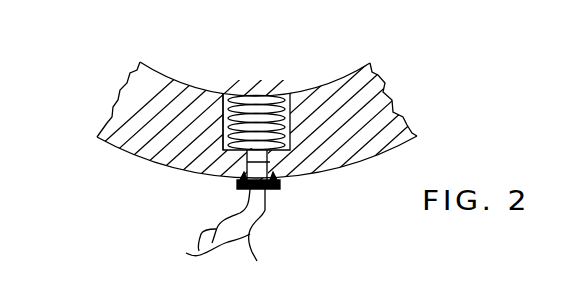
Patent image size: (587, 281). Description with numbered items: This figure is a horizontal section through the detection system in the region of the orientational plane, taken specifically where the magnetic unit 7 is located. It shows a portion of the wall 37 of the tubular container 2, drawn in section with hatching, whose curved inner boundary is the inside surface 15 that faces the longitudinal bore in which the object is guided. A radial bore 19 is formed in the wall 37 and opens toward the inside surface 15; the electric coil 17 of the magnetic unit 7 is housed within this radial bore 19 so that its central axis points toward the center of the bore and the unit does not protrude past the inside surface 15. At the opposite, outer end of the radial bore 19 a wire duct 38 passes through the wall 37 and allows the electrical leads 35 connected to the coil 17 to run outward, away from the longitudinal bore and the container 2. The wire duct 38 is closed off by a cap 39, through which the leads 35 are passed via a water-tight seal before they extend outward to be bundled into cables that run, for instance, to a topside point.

The container 2 is at (312, 123).
The magnetic unit 7 is at (256, 96).
The inside surface 15 is at (255, 54).
The electric coil 17 is at (261, 98).
The radial bore 19 is at (213, 98).
The electrical leads 35 is at (211, 226).
The wall 37 is at (409, 99).
The wire duct 38 is at (257, 186).
The cap 39 is at (272, 204).